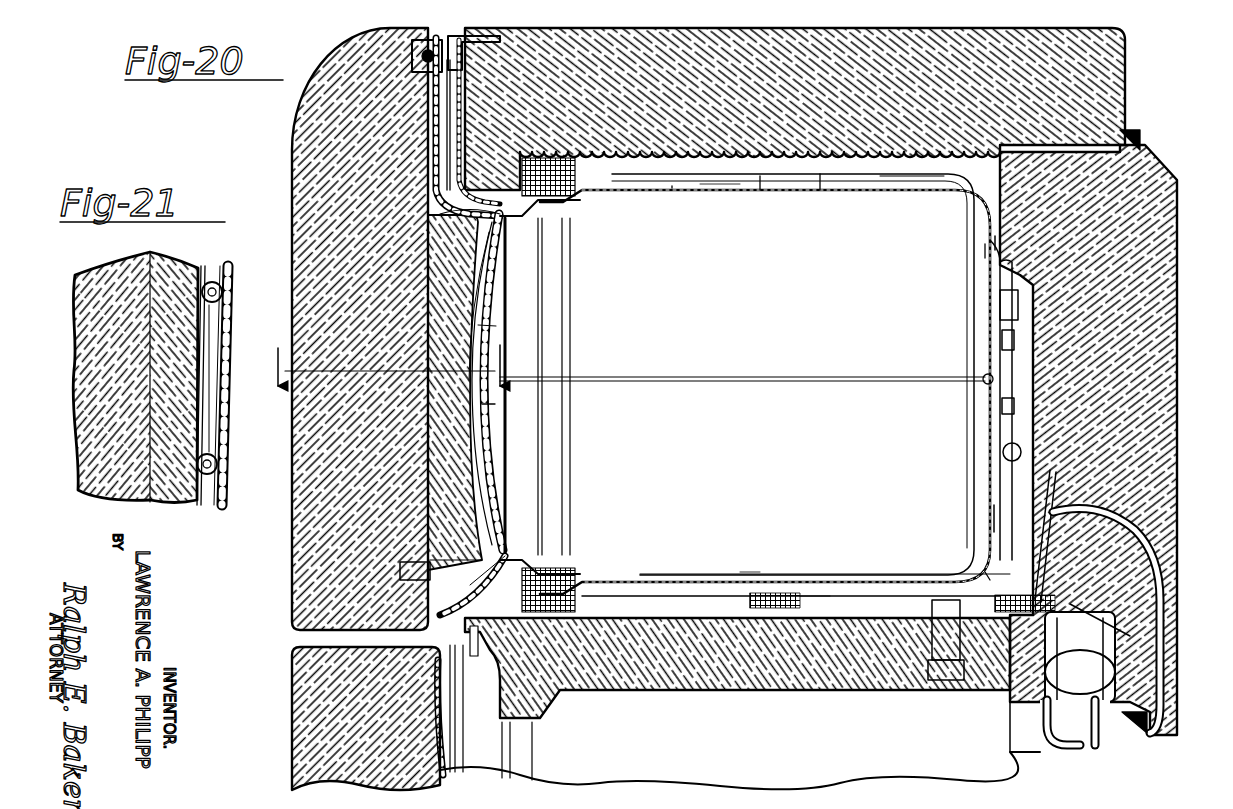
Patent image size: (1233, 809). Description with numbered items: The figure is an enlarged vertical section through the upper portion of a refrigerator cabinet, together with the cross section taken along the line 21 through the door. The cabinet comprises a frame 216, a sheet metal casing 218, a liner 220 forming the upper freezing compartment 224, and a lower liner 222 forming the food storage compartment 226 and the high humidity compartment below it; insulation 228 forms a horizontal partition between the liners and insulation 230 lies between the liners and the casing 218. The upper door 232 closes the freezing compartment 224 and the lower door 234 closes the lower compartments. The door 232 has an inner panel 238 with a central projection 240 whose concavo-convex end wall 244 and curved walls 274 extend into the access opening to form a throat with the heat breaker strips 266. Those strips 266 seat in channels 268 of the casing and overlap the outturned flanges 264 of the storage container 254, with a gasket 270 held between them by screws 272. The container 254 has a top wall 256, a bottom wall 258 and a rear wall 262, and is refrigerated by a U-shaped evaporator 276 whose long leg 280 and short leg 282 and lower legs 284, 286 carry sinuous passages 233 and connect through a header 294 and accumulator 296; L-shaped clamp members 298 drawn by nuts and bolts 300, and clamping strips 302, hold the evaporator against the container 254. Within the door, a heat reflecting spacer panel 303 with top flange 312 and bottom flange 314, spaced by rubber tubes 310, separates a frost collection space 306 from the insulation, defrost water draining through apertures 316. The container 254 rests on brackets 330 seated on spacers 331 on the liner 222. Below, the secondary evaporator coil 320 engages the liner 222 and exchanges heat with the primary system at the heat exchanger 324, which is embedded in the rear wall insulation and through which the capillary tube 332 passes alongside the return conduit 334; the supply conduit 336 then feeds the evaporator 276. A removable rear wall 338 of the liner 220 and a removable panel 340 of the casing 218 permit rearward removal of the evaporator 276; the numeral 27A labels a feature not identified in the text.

In FIG. 20, the frame 216 is at (490, 34).
In FIG. 20, the sheet metal casing 218 is at (724, 34).
In FIG. 20, the liner member or spacer 220 is at (768, 180).
In FIG. 20, the section line 21— 21 is at (407, 365).
In FIG. 21, the section line 21— 21 is at (264, 367).
In FIG. 20, the liner member or shell 222 is at (757, 690).
In FIG. 20, the upper freezing compartment 224 is at (619, 192).
In FIG. 20, the food storage compartment 226 is at (976, 752).
In FIG. 20, the insulation 228 is at (608, 688).
In FIG. 20, the insulation 230 is at (990, 36).
In FIG. 20, the upper door 232 is at (292, 134).
In FIG. 21, the upper door 232 is at (100, 482).
In FIG. 20, the sinuous refrigerant passage 233 is at (760, 190).
In FIG. 20, the lower door 234 is at (292, 712).
In FIG. 20, the inner panel 238 is at (432, 110).
In FIG. 21, the inner panel 238 is at (233, 414).
In FIG. 20, the projection 240 is at (633, 600).
In FIG. 20, the concavo-convex end wall 244 is at (490, 406).
In FIG. 21, the concavo-convex end wall 244 is at (229, 441).
In FIG. 20, the storage compartment forming container 254 is at (942, 214).
In FIG. 20, the top wall 256 is at (720, 198).
In FIG. 20, the bottom wall 258 is at (744, 574).
In FIG. 20, the rear wall 262 is at (998, 272).
In FIG. 20, the outturned flanges 264 is at (520, 180).
In FIG. 20, the heat breaker strips 266 is at (462, 110).
In FIG. 20, the channels 268 is at (448, 36).
In FIG. 20, the gasket 270 is at (522, 560).
In FIG. 20, the self threading or sheet metal screws 272 is at (560, 217).
In FIG. 20, the curved top, bottom and side walls 274 is at (487, 570).
In FIG. 20, the refrigerant evaporator 276 is at (916, 177).
In FIG. 20, the joint 27A is at (440, 213).
In FIG. 20, the relatively long leg 280 is at (820, 190).
In FIG. 20, the relatively short leg 282 is at (984, 252).
In FIG. 20, the relatively long sheet metal leg 284 is at (848, 598).
In FIG. 20, the relatively short sheet metal leg 286 is at (998, 517).
In FIG. 20, the refrigerant header 294 is at (1004, 300).
In FIG. 20, the refrigerant accumulator 296 is at (1010, 456).
In FIG. 20, the L-shaped clamp members 298 is at (1003, 346).
In FIG. 20, the nuts and bolts 300 is at (983, 378).
In FIG. 20, the clamps 302 is at (672, 188).
In FIG. 20, the spacer panel 303 is at (474, 302).
In FIG. 21, the spacer panel 303 is at (204, 324).
In FIG. 21, the frost collection space 306 is at (212, 342).
In FIG. 20, the spacer tubes 310 is at (480, 326).
In FIG. 21, the spacer tubes 310 is at (222, 292).
In FIG. 20, the top flange 312 is at (455, 392).
In FIG. 20, the bottom flange 314 is at (440, 565).
In FIG. 20, the drain apertures 316 is at (456, 536).
In FIG. 20, the refrigerant evaporator 320 is at (1027, 740).
In FIG. 20, the heat exchanger or evaporator 324 is at (1220, 648).
In FIG. 20, the brackets 330 is at (985, 572).
In FIG. 20, the spacers 331 is at (930, 620).
In FIG. 20, the capillary tube 332 is at (1220, 623).
In FIG. 20, the refrigerant return conduit 334 is at (1162, 562).
In FIG. 20, the refrigerant supply conduit 336 is at (1048, 477).
In FIG. 20, the removable rear wall or closure member 338 is at (995, 242).
In FIG. 20, the removable panel or closure member 340 is at (1177, 300).